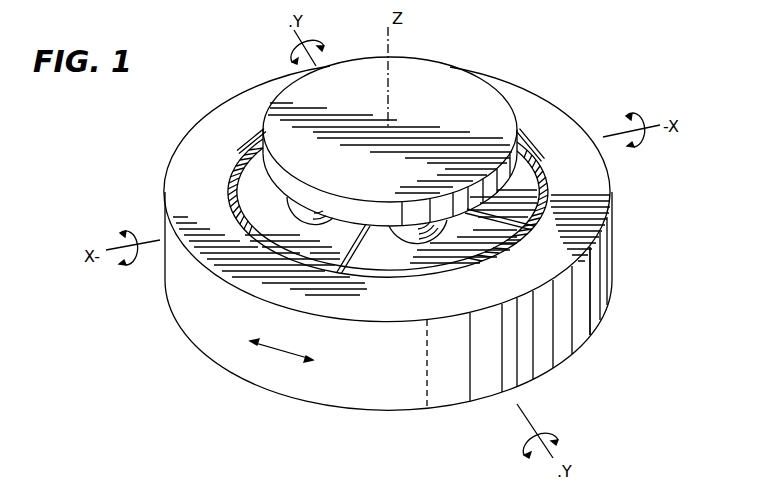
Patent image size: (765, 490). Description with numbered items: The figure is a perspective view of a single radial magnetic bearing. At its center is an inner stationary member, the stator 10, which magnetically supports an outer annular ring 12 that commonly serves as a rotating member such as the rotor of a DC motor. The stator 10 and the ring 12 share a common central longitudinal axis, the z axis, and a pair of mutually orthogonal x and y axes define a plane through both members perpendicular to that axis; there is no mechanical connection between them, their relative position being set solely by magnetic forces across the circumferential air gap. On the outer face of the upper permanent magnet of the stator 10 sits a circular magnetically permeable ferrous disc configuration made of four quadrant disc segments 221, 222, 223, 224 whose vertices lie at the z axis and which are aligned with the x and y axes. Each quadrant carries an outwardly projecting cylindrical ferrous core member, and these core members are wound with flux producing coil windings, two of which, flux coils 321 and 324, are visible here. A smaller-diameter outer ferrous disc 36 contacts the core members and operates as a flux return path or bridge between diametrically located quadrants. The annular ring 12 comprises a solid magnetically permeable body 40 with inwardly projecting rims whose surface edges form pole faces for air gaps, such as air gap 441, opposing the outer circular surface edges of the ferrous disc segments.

The stator 10 is at (537, 141).
The annular ring member 12 is at (616, 250).
The quadrant disc segment 221 is at (240, 186).
The quadrant disc segment 222 is at (262, 148).
The quadrant disc segment 223 is at (537, 188).
The quadrant disc segment 224 is at (456, 255).
The flux coil 321 is at (289, 203).
The flux coil 324 is at (408, 232).
The outer ferrous disc 36 is at (487, 83).
The magnetically permeable body 40 is at (590, 311).
The air gap 441 is at (549, 178).